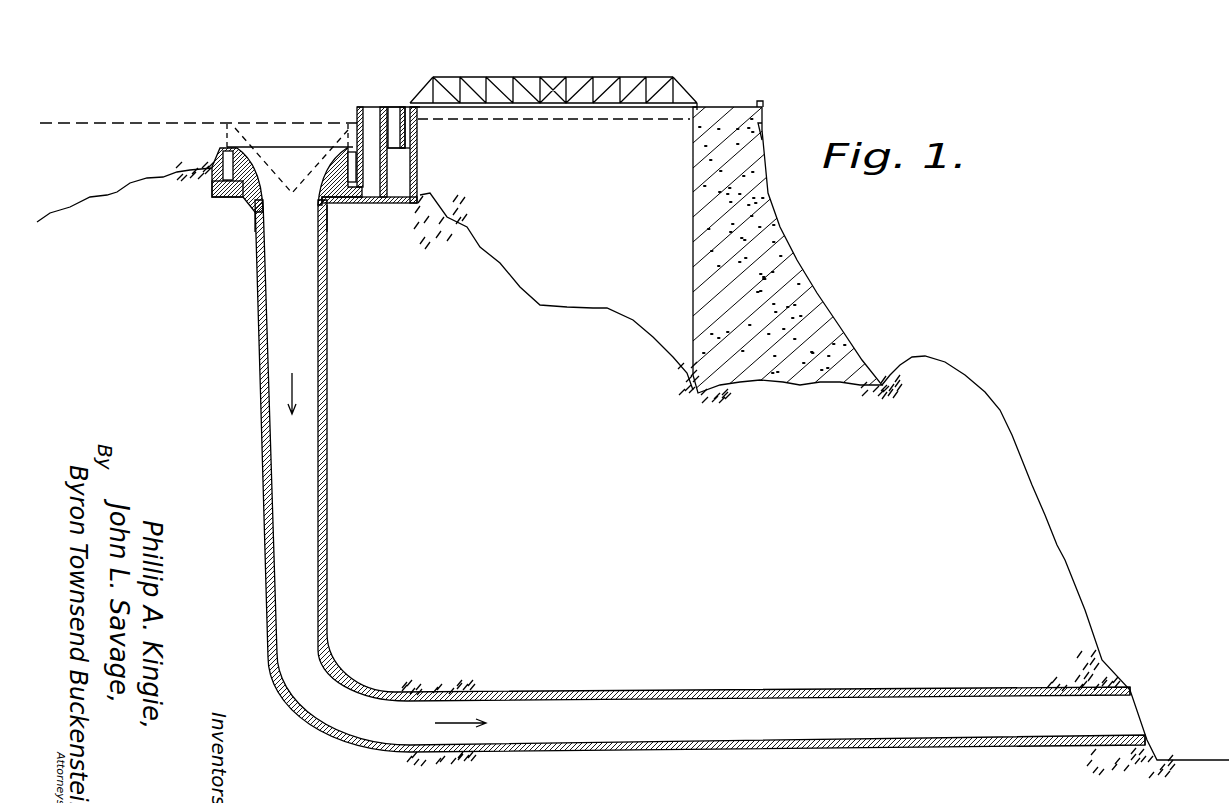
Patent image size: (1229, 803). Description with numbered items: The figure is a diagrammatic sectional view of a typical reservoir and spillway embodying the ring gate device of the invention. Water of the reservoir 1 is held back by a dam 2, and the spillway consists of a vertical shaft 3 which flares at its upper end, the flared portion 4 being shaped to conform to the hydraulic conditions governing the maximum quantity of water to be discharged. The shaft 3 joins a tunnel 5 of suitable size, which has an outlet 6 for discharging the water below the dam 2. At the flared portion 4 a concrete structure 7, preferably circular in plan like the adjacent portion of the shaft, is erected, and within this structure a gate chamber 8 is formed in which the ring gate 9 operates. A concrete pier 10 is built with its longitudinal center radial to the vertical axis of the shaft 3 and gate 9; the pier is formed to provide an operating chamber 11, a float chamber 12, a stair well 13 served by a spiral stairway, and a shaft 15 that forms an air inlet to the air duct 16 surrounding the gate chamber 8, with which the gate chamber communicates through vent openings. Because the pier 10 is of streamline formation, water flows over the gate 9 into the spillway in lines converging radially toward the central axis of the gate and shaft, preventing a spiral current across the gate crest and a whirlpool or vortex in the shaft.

The reservoir 1 is at (580, 225).
The dam 2 is at (783, 232).
The vertical shaft 3 is at (700, 476).
The flared portion 4 is at (258, 181).
The tunnel 5 is at (561, 723).
The outlet 6 is at (1127, 710).
The concrete structure 7 is at (212, 168).
The gate chamber 8 is at (213, 186).
The ring gate 9 is at (220, 160).
The concrete pier 10 is at (417, 157).
The operating chamber 11 is at (400, 175).
The float chamber 12 is at (402, 133).
The stair well 13 is at (403, 113).
The shaft 15 is at (367, 122).
The air duct 16 is at (337, 182).